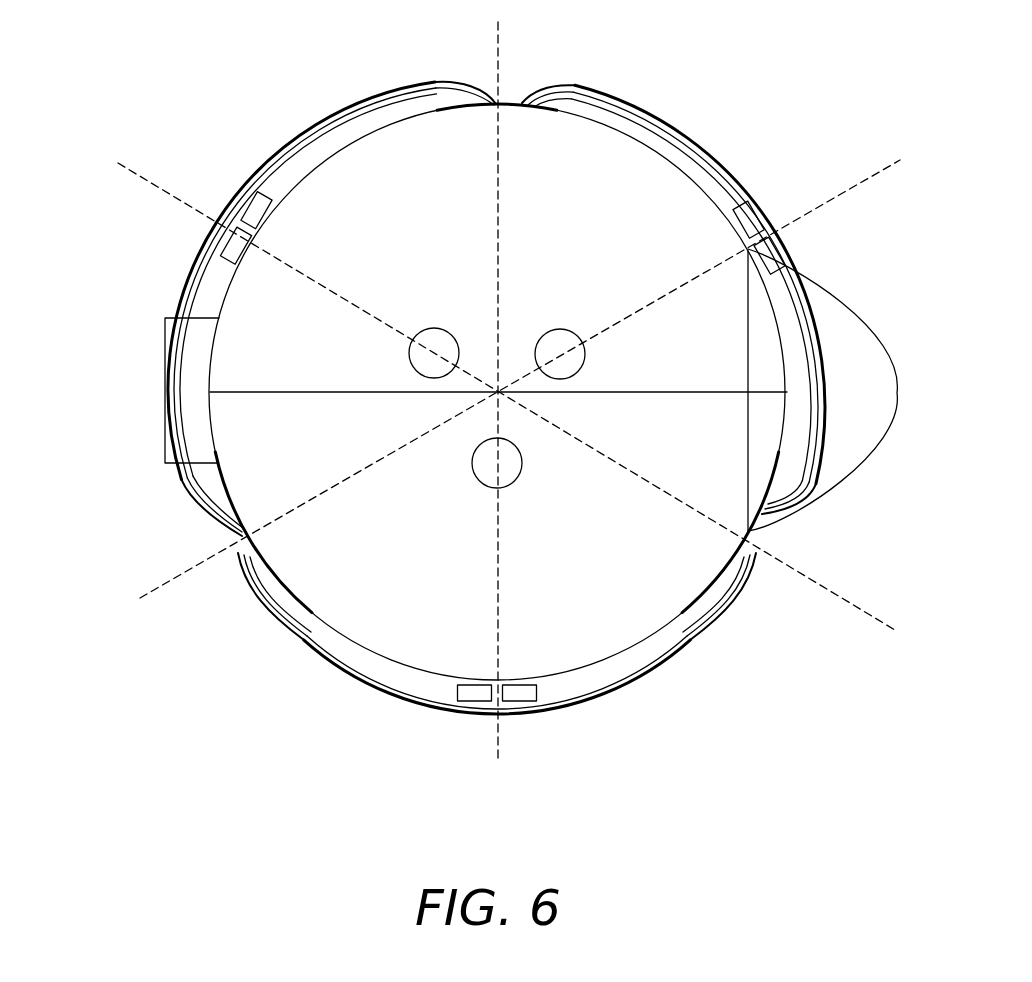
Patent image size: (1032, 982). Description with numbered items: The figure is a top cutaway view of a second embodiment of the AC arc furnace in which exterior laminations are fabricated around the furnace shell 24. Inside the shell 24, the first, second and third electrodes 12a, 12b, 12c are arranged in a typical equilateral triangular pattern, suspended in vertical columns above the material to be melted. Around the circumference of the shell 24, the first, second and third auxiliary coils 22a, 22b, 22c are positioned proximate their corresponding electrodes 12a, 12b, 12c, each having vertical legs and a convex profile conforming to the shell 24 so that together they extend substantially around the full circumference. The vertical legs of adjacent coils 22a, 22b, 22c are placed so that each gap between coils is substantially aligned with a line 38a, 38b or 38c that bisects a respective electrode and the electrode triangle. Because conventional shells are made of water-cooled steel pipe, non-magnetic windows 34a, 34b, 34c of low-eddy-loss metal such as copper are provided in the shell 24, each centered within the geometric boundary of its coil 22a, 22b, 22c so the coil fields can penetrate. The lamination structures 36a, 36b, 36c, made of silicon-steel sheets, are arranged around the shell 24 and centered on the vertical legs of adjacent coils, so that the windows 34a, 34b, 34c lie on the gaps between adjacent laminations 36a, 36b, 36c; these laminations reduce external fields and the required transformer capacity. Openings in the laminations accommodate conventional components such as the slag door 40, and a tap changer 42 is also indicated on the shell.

The first electrode 12a is at (507, 487).
The second electrode 12b is at (587, 351).
The third electrode 12c is at (436, 327).
The first auxiliary coil 22a is at (474, 690).
The second auxiliary coil 22b is at (527, 688).
The third auxiliary coil 22c is at (262, 210).
The furnace shell 24 is at (626, 136).
The first non-magnetic window 34a is at (246, 534).
The second non-magnetic window 34b is at (740, 548).
The third non-magnetic window 34c is at (510, 98).
The first lamination structure 36a is at (583, 703).
The second lamination structure 36b is at (664, 117).
The third lamination structure 36c is at (306, 130).
The bisecting line 38a is at (494, 745).
The bisecting line 38b is at (857, 166).
The bisecting line 38c is at (154, 172).
The slag door 40 is at (162, 355).
The tap changer 42 is at (888, 336).